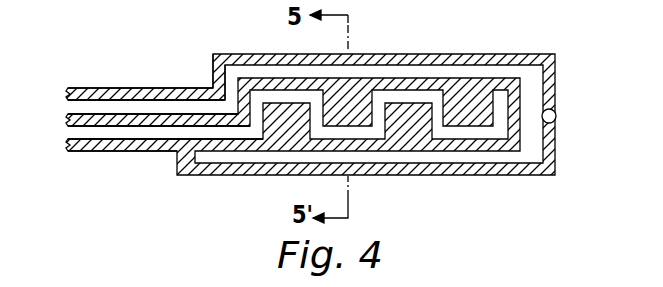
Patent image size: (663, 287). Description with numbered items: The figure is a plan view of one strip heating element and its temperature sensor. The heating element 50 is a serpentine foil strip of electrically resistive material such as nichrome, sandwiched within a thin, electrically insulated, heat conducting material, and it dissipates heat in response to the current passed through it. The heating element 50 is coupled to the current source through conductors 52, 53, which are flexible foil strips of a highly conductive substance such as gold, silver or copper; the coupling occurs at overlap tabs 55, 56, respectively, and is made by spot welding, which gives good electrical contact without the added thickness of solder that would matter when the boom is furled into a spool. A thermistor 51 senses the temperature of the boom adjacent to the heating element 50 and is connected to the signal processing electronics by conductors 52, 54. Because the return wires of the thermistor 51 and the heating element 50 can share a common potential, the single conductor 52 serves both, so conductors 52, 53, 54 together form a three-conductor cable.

The heating element 50 is at (432, 77).
The thermistor 51 is at (556, 118).
The conductor 52 is at (100, 152).
The conductor 53 is at (70, 125).
The conductor 54 is at (83, 88).
The overlap tab 55 is at (204, 138).
The overlap tab 56 is at (205, 120).